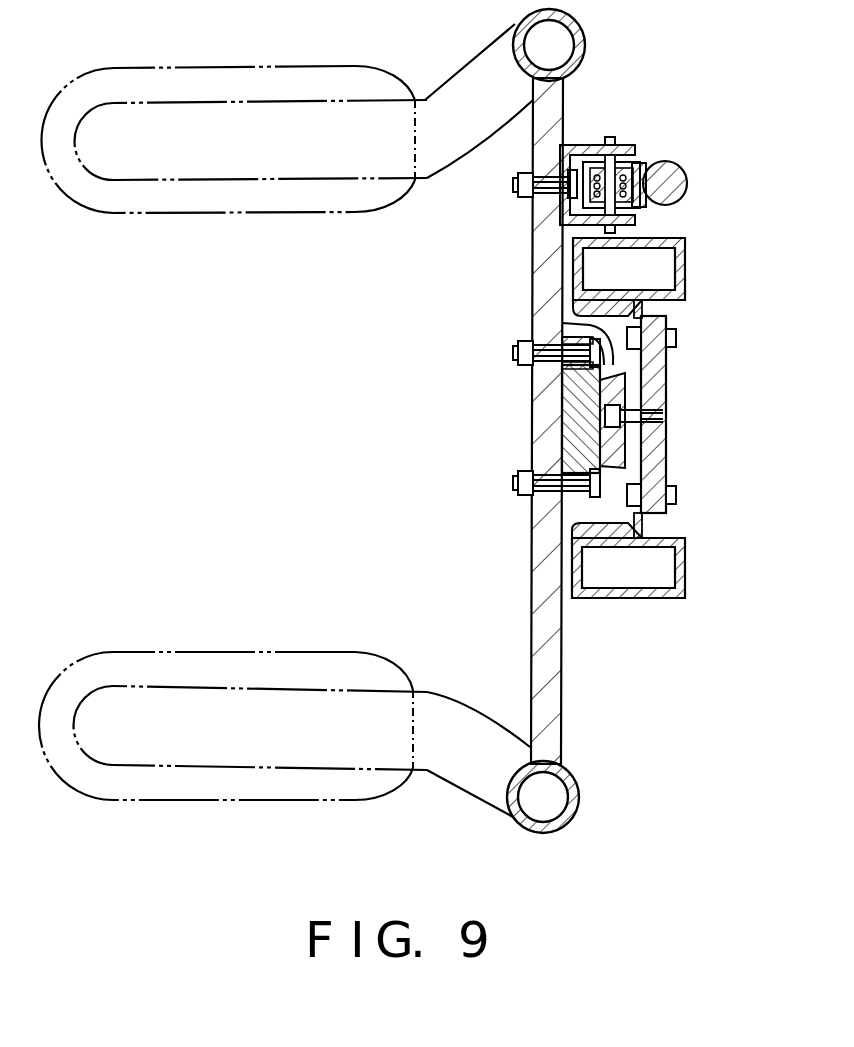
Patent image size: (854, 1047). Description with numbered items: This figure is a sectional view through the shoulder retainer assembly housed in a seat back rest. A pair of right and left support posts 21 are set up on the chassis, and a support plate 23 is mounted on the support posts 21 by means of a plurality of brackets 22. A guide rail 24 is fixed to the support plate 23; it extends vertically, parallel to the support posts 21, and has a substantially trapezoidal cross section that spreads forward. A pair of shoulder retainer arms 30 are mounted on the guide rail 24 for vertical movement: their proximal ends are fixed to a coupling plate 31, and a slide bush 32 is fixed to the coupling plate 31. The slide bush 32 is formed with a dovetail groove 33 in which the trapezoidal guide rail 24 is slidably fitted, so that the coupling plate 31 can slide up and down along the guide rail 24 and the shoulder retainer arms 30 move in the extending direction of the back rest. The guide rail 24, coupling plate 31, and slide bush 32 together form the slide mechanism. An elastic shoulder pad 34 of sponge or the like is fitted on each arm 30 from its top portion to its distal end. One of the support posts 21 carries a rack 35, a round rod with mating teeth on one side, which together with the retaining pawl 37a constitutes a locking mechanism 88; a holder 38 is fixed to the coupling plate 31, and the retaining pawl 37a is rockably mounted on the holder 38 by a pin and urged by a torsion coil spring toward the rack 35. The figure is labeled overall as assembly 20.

The frame assembly 20 is at (178, 447).
The support post 21 is at (686, 270).
The bracket 22 is at (633, 533).
The support plate 23 is at (665, 463).
The guide rail 24 is at (662, 393).
The shoulder retainer arm 30 is at (460, 72).
The coupling plate 31 is at (536, 608).
The slide bush 32 is at (568, 406).
The dovetail groove 33 is at (533, 320).
The elastic shoulder pad 34 is at (231, 212).
The rack 35 is at (686, 190).
The retaining pawl 37a is at (655, 150).
The holder 38 is at (628, 143).
The locking mechanism 88 is at (651, 122).